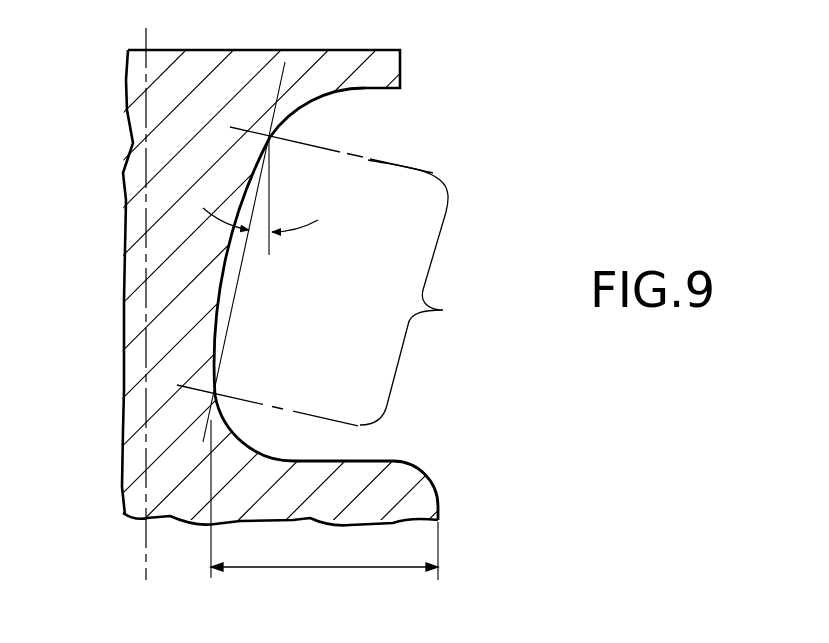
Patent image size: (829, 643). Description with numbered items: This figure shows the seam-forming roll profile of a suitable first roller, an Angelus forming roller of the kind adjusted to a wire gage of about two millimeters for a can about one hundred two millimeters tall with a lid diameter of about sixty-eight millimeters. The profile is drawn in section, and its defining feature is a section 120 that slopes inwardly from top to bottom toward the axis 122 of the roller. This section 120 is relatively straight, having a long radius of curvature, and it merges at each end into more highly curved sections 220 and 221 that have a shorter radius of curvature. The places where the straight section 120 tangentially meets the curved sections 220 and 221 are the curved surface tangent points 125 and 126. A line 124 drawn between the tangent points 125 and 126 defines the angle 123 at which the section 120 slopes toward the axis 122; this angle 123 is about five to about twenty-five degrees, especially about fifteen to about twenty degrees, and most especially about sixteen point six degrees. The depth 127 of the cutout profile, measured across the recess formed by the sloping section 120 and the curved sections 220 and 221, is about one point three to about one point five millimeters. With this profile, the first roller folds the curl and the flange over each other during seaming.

The section 120 is at (352, 281).
The axis 122 is at (146, 553).
The angle 123 is at (255, 245).
The line 124 is at (320, 52).
The tangent point 125 is at (271, 140).
The tangent point 126 is at (216, 392).
The depth 127 is at (334, 568).
The section 220 is at (317, 97).
The section 221 is at (258, 450).